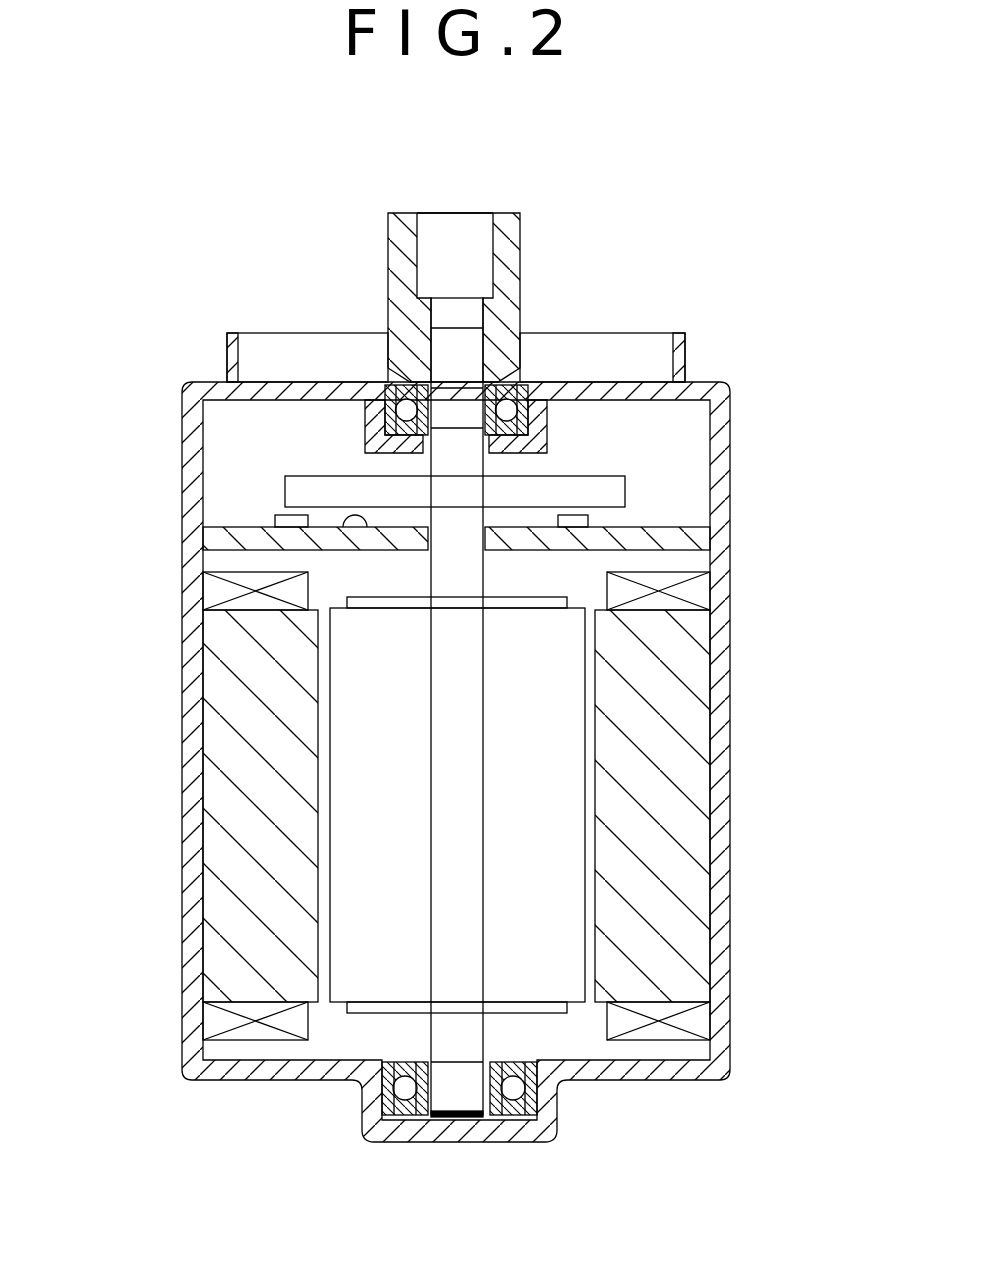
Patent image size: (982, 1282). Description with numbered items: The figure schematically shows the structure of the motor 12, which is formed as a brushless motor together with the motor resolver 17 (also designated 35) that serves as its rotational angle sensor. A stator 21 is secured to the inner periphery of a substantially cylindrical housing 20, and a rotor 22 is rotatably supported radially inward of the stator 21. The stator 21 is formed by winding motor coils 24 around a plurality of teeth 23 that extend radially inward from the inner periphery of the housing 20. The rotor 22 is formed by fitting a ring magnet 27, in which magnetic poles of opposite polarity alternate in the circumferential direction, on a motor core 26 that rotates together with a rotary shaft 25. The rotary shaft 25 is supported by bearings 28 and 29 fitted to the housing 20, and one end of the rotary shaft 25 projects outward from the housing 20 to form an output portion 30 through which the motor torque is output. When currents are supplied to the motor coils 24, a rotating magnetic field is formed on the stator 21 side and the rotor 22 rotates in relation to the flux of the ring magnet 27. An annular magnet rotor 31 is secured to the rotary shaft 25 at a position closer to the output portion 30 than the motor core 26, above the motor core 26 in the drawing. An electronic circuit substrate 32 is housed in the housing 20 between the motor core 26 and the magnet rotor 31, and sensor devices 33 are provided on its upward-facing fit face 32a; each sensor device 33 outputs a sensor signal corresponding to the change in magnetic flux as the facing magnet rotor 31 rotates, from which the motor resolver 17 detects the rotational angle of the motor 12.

The motor 12 is at (142, 270).
The motor resolver 17 is at (543, 462).
The resolver 35 is at (455, 471).
The housing 20 is at (200, 382).
The stator 21 is at (456, 759).
The rotor 22 is at (559, 707).
The teeth 23 is at (215, 700).
The motor coils 24 is at (215, 593).
The rotary shaft 25 is at (483, 466).
The motor core 26 is at (504, 603).
The ring magnet 27 is at (596, 559).
The bearing 28 is at (522, 385).
The bearing 29 is at (533, 1097).
The output portion 30 is at (520, 228).
The magnet rotor 31 is at (307, 476).
The electronic circuit substrate 32 is at (498, 556).
The fit face 32a is at (357, 527).
The sensor devices 33 is at (275, 516).